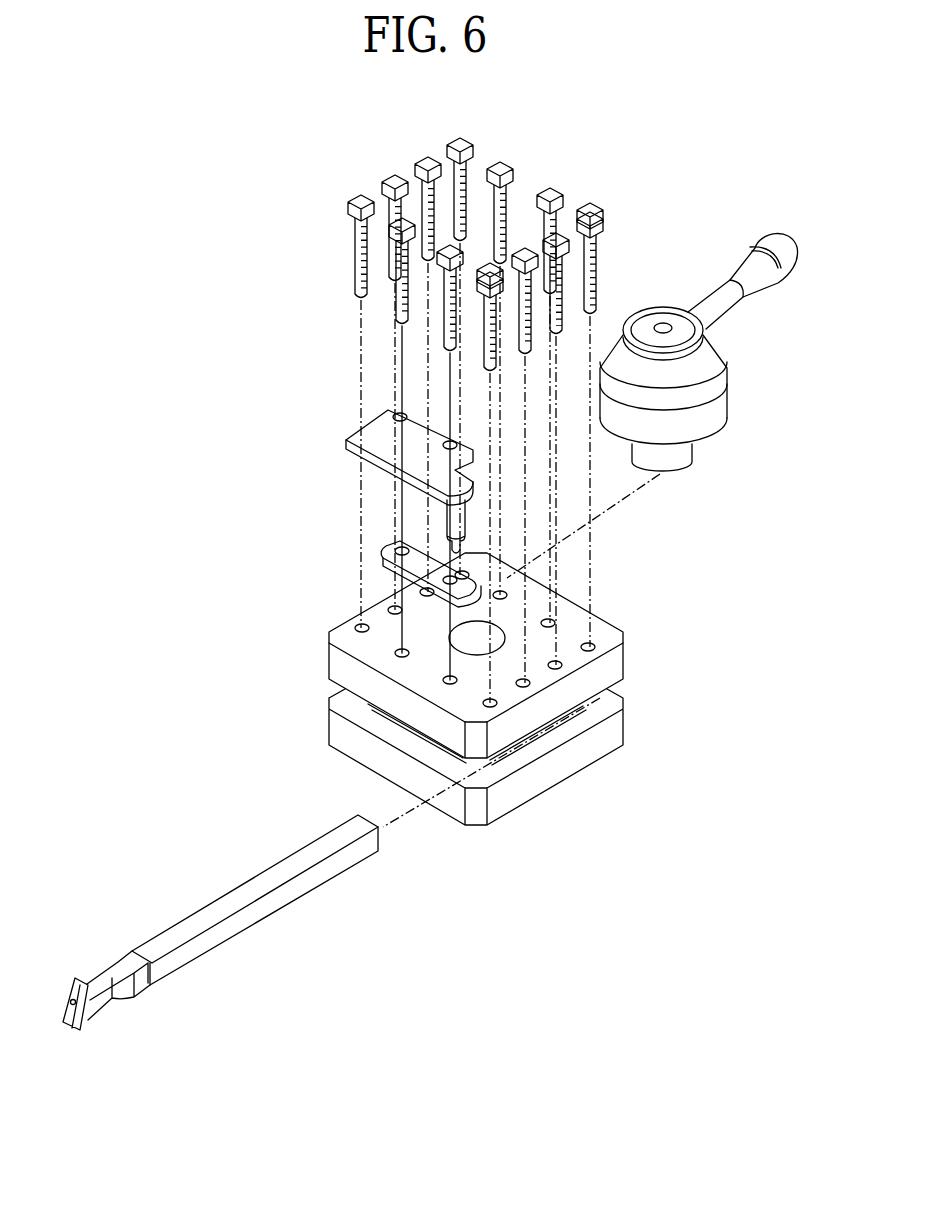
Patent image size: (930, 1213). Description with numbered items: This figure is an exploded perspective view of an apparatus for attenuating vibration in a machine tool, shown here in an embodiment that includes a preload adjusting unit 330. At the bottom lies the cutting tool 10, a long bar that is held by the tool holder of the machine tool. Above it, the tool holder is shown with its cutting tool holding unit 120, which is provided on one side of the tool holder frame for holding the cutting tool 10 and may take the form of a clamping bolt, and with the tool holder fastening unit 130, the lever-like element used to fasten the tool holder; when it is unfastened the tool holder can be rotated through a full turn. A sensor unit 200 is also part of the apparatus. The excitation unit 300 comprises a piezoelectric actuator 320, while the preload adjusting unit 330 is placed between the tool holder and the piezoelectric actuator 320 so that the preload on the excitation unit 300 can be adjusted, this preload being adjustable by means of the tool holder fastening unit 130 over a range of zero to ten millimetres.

The cutting tool 10 is at (286, 868).
The cutting tool holding unit 120 is at (353, 203).
The tool holder fastening unit 130 is at (745, 275).
The sensor unit 200 is at (593, 220).
The excitation unit 300 is at (353, 494).
The piezoelectric actuator 320 is at (453, 522).
The preload adjusting unit 330 is at (390, 557).